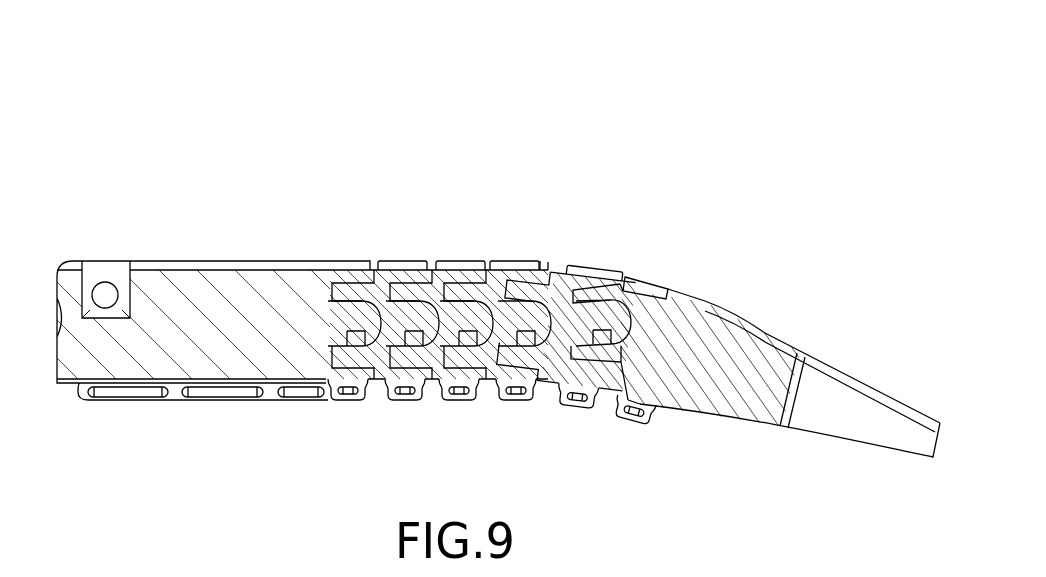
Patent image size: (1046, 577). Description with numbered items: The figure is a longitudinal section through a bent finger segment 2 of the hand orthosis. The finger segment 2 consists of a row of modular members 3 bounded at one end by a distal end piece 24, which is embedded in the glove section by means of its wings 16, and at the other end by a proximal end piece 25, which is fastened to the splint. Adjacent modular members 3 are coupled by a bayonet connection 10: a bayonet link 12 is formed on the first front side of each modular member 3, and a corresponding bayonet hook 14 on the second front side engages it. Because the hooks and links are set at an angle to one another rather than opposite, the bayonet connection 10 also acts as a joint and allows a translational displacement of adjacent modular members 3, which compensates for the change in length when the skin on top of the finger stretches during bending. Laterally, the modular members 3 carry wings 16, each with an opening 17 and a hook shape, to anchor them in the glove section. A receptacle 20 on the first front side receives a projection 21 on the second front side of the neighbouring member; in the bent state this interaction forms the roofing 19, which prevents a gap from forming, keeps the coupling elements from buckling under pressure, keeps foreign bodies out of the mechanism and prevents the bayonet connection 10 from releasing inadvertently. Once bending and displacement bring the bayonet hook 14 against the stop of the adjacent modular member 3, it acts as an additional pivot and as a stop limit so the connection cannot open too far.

The finger segment 2 is at (857, 458).
The modular member 3 is at (560, 377).
The bayonet connection 10 is at (426, 338).
The bayonet link 12 is at (342, 282).
The bayonet hook 14 is at (398, 343).
The wing 16 is at (176, 393).
The opening 17 is at (243, 392).
The roofing 19 is at (548, 269).
The receptacle 20 is at (364, 282).
The projection 21 is at (542, 300).
The distal end piece 24 is at (152, 282).
The proximal end piece 25 is at (713, 302).